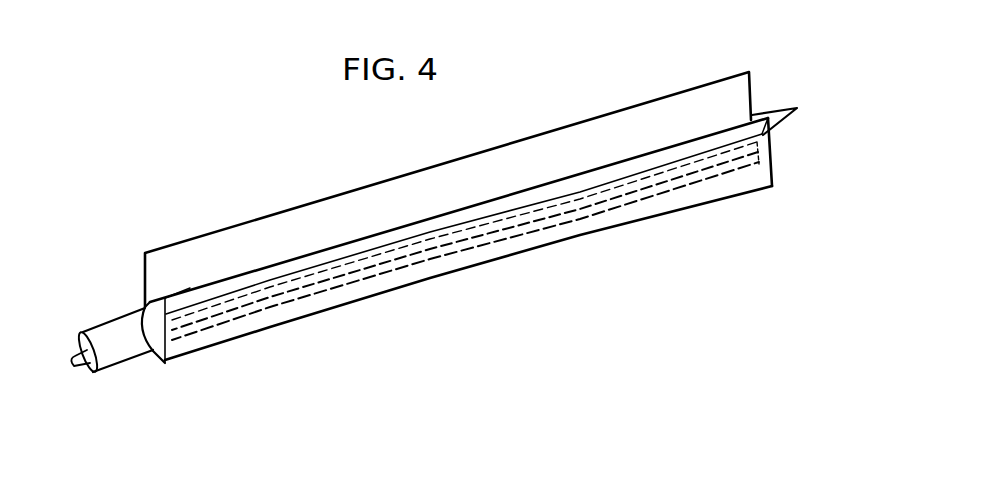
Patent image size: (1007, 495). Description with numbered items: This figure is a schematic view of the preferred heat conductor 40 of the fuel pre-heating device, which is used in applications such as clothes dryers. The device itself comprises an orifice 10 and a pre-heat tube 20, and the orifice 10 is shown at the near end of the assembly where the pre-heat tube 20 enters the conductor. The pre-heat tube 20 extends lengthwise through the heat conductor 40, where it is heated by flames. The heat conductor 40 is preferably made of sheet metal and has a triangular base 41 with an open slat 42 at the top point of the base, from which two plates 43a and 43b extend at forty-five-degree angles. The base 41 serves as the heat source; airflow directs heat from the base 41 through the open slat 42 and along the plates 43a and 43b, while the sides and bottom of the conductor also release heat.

The orifice 10 is at (118, 347).
The pre-heat tube 20 is at (755, 163).
The heat conductor 40 is at (293, 173).
The triangular base 41 is at (217, 338).
The open slat 42 is at (150, 301).
The plate 43a is at (727, 97).
The plate 43b is at (771, 118).